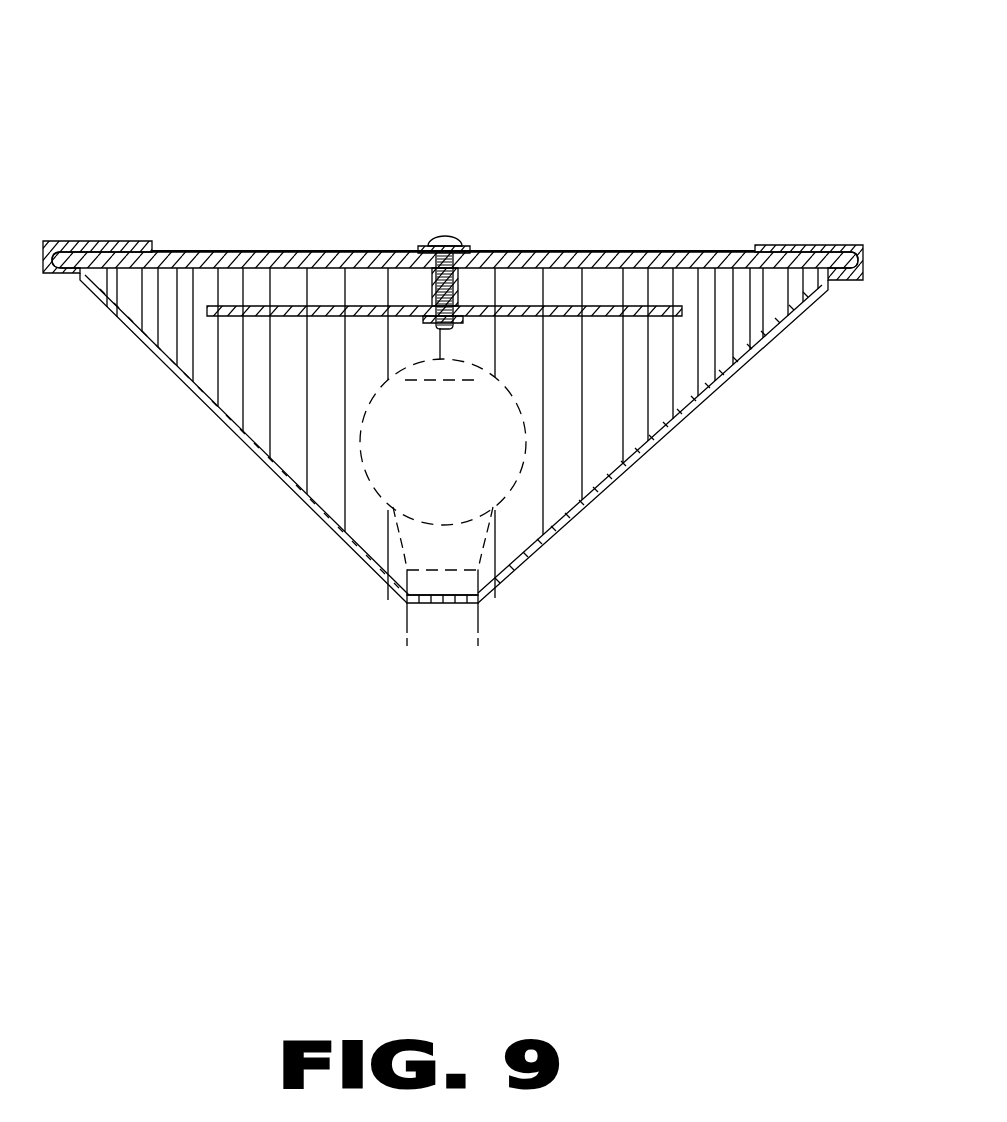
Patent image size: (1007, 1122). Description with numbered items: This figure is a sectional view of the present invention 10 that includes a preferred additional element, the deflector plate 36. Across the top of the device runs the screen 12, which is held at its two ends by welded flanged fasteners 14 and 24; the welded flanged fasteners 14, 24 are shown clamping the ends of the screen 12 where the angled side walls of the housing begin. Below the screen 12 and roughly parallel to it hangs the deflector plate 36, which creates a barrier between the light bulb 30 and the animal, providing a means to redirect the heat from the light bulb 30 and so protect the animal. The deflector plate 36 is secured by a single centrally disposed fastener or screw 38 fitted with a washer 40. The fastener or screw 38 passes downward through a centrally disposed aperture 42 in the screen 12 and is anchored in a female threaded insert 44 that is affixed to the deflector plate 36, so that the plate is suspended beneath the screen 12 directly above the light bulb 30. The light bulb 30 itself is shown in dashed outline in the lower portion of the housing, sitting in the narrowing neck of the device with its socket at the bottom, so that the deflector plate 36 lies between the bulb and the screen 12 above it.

The present invention 10 is at (636, 150).
The screen 12 is at (275, 250).
The welded flanged fastener 14 is at (91, 242).
The welded flanged fastener 24 is at (103, 290).
The light bulb 30 is at (502, 500).
The deflector plate 36 is at (597, 320).
The fastener or screw 38 is at (446, 235).
The washer 40 is at (473, 250).
The centrally disposed aperture 42 is at (423, 226).
The female threaded insert 44 is at (433, 320).